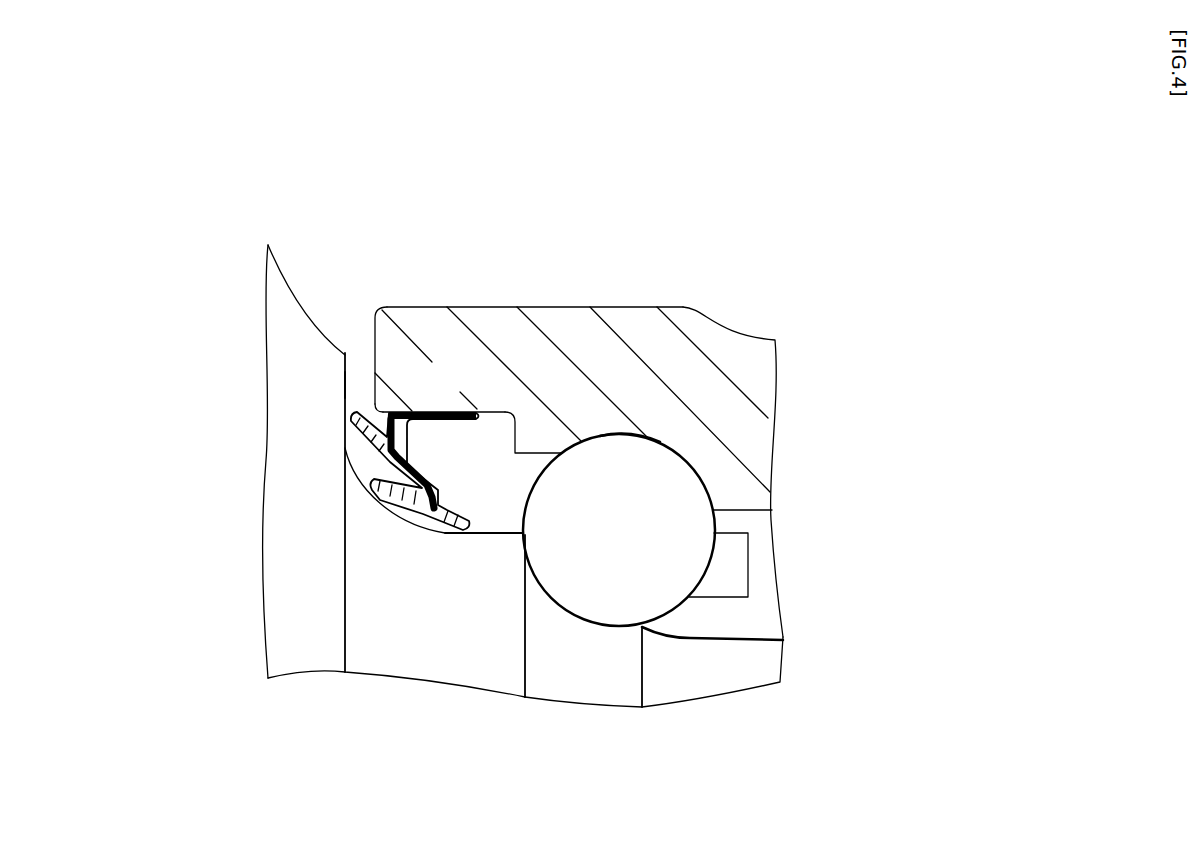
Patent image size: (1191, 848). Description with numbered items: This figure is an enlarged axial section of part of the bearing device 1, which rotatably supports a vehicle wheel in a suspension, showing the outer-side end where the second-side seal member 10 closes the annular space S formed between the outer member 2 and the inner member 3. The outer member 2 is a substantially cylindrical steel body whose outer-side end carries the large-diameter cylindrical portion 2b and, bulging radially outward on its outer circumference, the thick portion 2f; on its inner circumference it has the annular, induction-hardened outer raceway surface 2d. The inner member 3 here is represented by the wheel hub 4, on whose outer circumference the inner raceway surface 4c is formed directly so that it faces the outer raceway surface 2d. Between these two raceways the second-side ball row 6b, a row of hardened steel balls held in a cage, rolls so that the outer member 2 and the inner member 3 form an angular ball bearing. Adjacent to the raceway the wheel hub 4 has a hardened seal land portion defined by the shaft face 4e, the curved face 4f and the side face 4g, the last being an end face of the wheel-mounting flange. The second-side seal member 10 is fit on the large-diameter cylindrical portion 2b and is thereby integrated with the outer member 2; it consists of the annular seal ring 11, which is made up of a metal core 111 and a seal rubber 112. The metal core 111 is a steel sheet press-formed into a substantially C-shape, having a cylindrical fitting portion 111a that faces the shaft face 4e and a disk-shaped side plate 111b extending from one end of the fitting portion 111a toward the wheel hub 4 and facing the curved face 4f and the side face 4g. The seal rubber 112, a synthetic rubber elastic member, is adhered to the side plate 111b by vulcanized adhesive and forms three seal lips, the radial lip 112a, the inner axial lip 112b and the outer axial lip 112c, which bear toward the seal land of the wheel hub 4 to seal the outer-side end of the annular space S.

The bearing device 1 is at (178, 150).
The outer member 2 is at (740, 288).
The large-diameter cylindrical portion 2b is at (490, 410).
The outer raceway surface 2d is at (648, 438).
The thick portion 2f is at (575, 306).
The inner member 3 is at (817, 638).
The wheel hub 4 is at (262, 352).
The inner raceway surface 4c is at (577, 621).
The shaft face 4e is at (491, 548).
The curved face 4f is at (405, 527).
The side face 4g is at (344, 384).
The second-side ball row 6b is at (663, 605).
The second-side seal member 10 is at (399, 427).
The seal ring 11 is at (461, 437).
The metal core 111 is at (440, 437).
The fitting portion 111a is at (442, 410).
The side plate 111b is at (420, 470).
The seal rubber 112 is at (392, 506).
The radial lip 112a is at (438, 530).
The inner axial lip 112b is at (378, 500).
The outer axial lip 112c is at (355, 448).
The annular space S is at (766, 585).